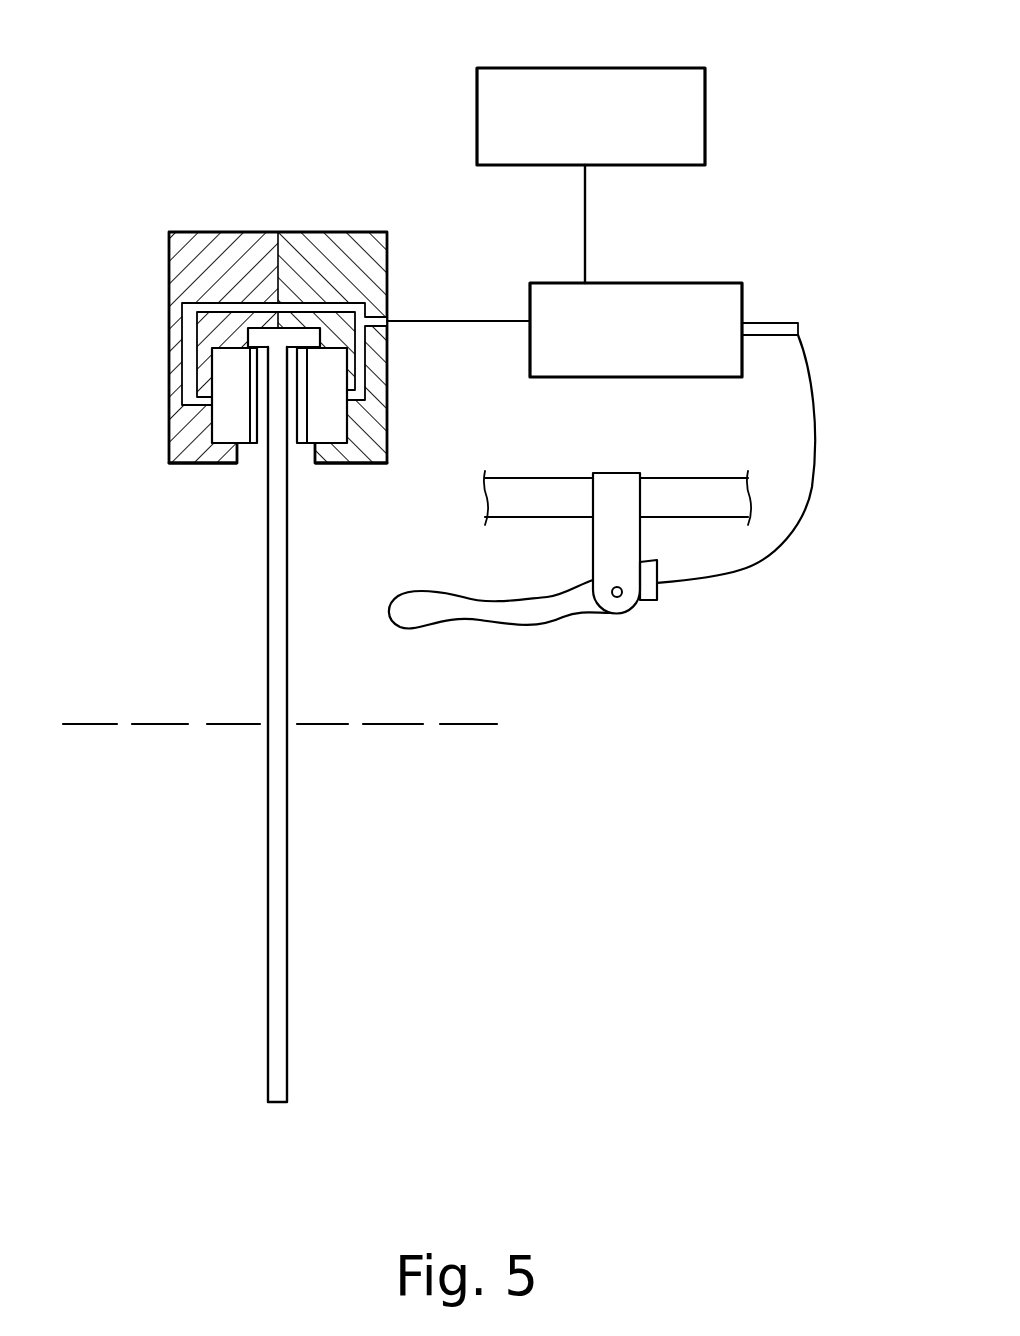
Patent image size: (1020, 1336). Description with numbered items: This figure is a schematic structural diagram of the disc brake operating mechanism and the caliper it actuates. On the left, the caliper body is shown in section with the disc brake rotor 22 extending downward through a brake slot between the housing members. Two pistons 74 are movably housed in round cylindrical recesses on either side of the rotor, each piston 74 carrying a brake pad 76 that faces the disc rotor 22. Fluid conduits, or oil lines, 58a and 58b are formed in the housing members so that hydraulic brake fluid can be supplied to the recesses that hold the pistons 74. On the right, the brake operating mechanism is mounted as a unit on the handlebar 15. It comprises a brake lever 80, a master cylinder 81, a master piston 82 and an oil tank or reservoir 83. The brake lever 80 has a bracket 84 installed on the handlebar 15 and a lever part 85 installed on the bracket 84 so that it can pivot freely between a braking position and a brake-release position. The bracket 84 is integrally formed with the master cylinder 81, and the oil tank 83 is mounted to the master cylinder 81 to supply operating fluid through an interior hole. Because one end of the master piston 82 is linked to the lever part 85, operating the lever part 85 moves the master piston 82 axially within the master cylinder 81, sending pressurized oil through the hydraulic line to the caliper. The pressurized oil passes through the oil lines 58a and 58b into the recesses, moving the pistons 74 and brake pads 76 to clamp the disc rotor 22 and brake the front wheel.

The handlebar 15 is at (540, 478).
The disc brake rotor 22 is at (288, 825).
The fluid conduit (oil line) 58a is at (185, 405).
The fluid conduit (oil line) 58b is at (363, 375).
The piston 74 is at (222, 420).
The brake pad 76 is at (253, 445).
The brake lever 80 is at (545, 587).
The master cylinder 81 is at (668, 283).
The master piston 82 is at (757, 320).
The oil tank or reservoir 83 is at (632, 68).
The bracket 84 is at (593, 562).
The lever part 85 is at (492, 627).